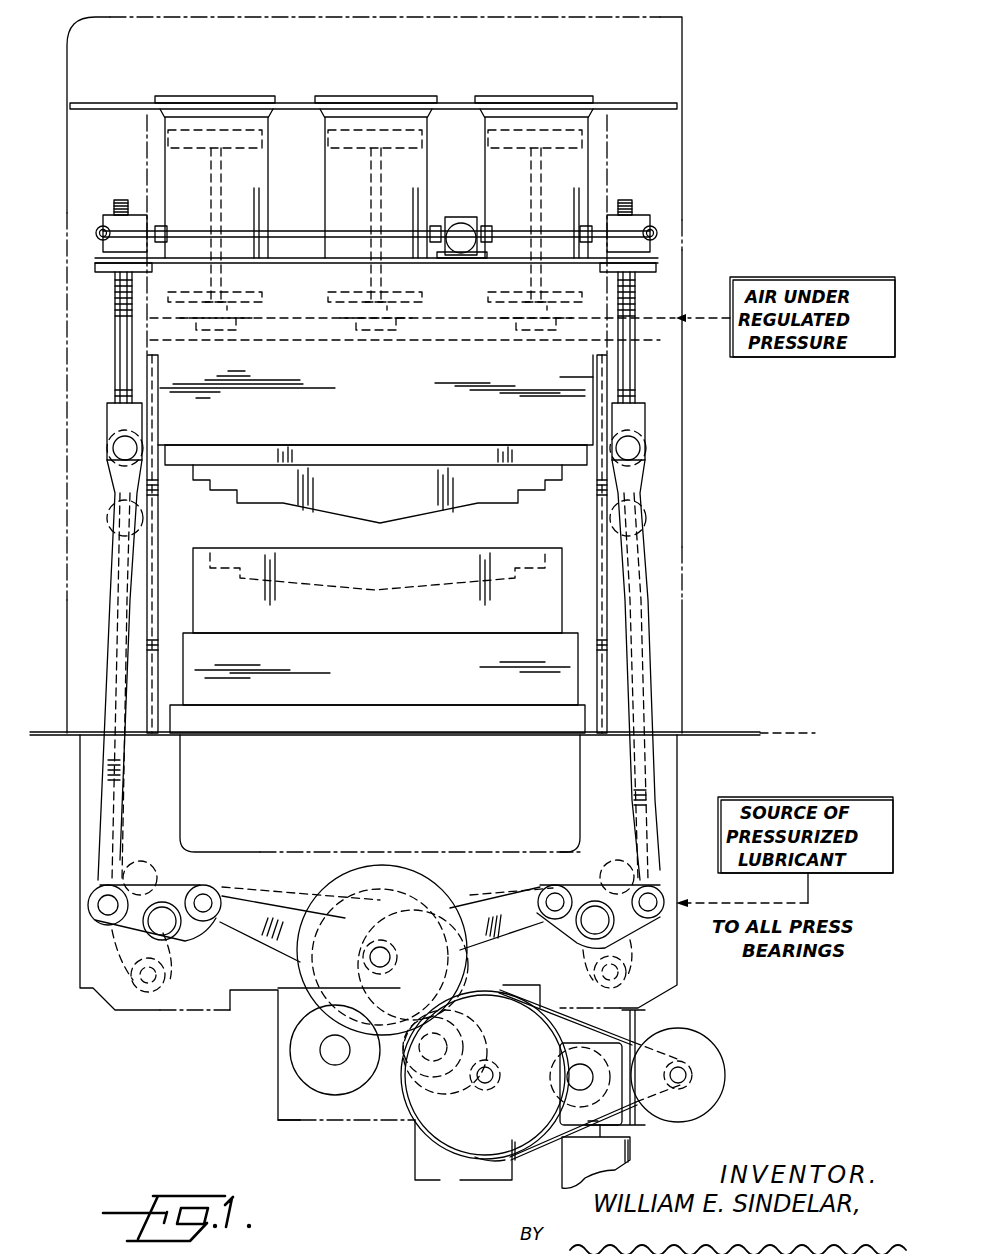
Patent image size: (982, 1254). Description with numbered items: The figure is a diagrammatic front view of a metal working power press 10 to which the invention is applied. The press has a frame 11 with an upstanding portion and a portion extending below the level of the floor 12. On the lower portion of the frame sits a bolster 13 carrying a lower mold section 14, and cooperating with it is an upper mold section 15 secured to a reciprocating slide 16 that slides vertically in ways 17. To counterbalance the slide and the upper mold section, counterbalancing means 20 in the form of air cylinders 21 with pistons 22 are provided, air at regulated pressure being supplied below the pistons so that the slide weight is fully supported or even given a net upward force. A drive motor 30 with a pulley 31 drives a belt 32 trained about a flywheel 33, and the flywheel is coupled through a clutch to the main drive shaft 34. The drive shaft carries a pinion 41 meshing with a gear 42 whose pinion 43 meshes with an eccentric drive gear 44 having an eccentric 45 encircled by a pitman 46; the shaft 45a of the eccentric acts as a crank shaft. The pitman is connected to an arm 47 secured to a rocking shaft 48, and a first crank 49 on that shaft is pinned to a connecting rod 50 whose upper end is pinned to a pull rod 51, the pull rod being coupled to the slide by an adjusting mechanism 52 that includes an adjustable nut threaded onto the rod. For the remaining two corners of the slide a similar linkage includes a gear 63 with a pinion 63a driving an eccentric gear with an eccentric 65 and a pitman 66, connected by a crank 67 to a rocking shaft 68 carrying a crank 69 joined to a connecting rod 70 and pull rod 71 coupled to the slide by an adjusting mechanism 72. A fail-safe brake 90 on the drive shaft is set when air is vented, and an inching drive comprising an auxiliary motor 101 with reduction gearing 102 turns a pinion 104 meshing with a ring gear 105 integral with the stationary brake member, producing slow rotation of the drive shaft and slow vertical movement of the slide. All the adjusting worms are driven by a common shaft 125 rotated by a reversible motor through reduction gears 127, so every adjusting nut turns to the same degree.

The power press 10 is at (705, 542).
The frame 11 is at (687, 652).
The floor 12 is at (730, 732).
The bolster 13 is at (417, 679).
The lower mold section 14 is at (322, 617).
The upper mold section 15 is at (387, 502).
The slide 16 is at (382, 406).
The ways 17 is at (158, 530).
The counterbalancing means 20 is at (624, 122).
The air cylinders 21 is at (167, 165).
The pistons 22 is at (212, 132).
The drive motor 30 is at (705, 1050).
The pulley 31 is at (700, 1077).
The belt 32 is at (610, 1043).
The flywheel 33 is at (572, 1020).
The main drive shaft 34 is at (480, 1090).
The pinion 41 is at (488, 1067).
The gear 42 is at (390, 1080).
The pinion 43 is at (450, 1035).
The eccentric drive gear 44 is at (380, 868).
The eccentric 45 is at (358, 915).
The shaft of the eccentric 45a is at (370, 957).
The pitman 46 is at (488, 908).
The arm 47 is at (557, 927).
The rocking shaft 48 is at (590, 905).
The first crank 49 is at (640, 918).
The connecting rod 50 is at (650, 783).
The pull rod 51 is at (630, 385).
The adjusting mechanism 52 is at (658, 220).
The gear 63 is at (292, 1063).
The pinion 63a is at (320, 1048).
The eccentric 65 is at (415, 930).
The pitman 66 is at (268, 915).
The crank 67 is at (208, 922).
The rocking shaft 68 is at (162, 940).
The crank 69 is at (92, 918).
The connecting rod 70 is at (108, 815).
The pull rod 71 is at (120, 338).
The adjusting mechanism 72 is at (103, 224).
The brake 90 is at (470, 1150).
The auxiliary motor 101 is at (632, 1153).
The reduction gearing 102 is at (637, 1030).
The pinion 104 is at (568, 1092).
The ring gear 105 is at (488, 1165).
The common shaft 125 is at (308, 206).
The reduction gears 127 is at (462, 217).